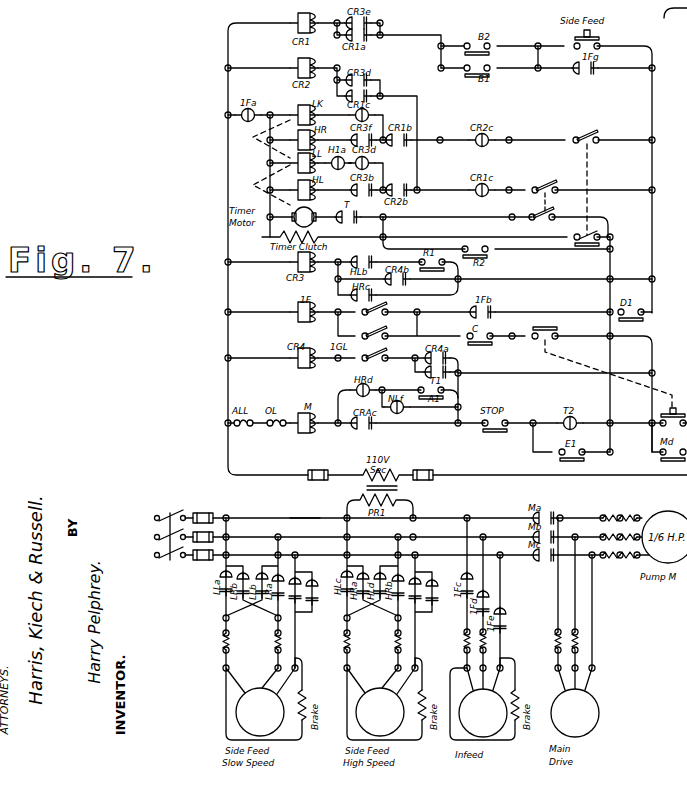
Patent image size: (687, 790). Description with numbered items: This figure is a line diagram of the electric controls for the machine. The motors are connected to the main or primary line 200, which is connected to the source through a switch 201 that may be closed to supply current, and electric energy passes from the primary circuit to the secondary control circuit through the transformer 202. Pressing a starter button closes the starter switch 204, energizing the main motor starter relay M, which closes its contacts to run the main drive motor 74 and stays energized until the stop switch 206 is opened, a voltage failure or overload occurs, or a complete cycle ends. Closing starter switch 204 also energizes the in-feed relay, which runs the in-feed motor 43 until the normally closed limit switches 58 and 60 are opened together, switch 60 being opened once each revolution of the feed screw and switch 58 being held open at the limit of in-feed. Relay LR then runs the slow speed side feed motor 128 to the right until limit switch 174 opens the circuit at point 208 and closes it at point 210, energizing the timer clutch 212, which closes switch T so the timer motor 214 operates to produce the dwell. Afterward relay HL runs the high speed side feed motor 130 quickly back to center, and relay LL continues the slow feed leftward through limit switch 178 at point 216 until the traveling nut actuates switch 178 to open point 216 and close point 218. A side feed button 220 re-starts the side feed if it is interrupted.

The side feed button 220 is at (598, 42).
The point of limit switch 174 208 is at (596, 145).
The limit switch 174 is at (590, 134).
The limit switch 178 is at (552, 184).
The point of limit switch 178 216 is at (540, 196).
The point of limit switch 178 218 is at (550, 212).
The point of limit switch 174 210 is at (588, 232).
The timer motor 214 is at (312, 209).
The timer clutch 212 is at (310, 237).
The limit switch 60 is at (382, 306).
The limit switch 58 is at (382, 330).
The starter switch 204 is at (557, 330).
The stop switch 206 is at (487, 430).
The main or primary line 200 is at (309, 555).
The switch 201 is at (172, 562).
The transformer 202 is at (400, 488).
The slow speed side feed motor 128 is at (272, 719).
The high speed side feed motor 130 is at (392, 719).
The infeed motor 43 is at (494, 720).
The main drive motor 74 is at (586, 720).